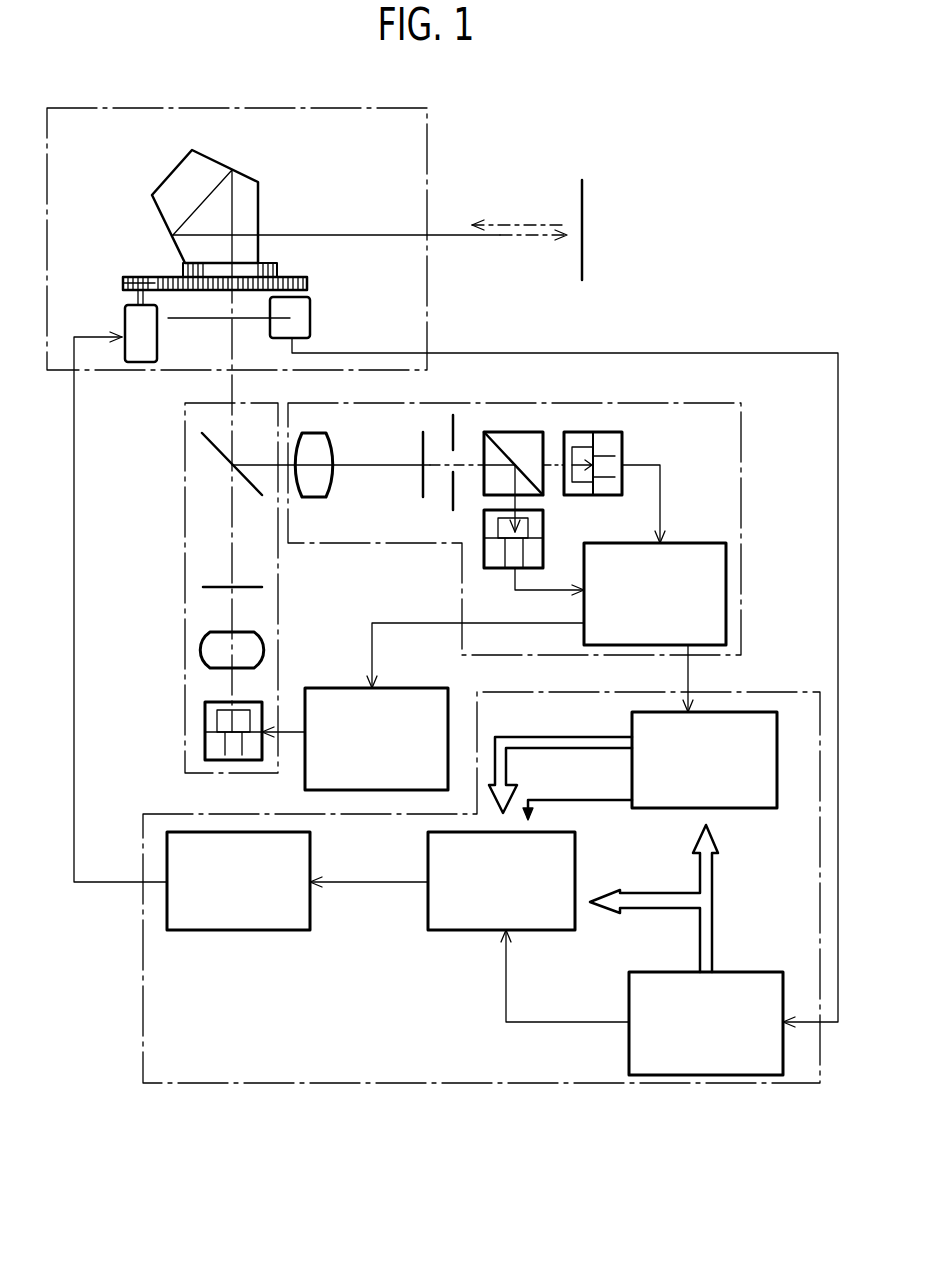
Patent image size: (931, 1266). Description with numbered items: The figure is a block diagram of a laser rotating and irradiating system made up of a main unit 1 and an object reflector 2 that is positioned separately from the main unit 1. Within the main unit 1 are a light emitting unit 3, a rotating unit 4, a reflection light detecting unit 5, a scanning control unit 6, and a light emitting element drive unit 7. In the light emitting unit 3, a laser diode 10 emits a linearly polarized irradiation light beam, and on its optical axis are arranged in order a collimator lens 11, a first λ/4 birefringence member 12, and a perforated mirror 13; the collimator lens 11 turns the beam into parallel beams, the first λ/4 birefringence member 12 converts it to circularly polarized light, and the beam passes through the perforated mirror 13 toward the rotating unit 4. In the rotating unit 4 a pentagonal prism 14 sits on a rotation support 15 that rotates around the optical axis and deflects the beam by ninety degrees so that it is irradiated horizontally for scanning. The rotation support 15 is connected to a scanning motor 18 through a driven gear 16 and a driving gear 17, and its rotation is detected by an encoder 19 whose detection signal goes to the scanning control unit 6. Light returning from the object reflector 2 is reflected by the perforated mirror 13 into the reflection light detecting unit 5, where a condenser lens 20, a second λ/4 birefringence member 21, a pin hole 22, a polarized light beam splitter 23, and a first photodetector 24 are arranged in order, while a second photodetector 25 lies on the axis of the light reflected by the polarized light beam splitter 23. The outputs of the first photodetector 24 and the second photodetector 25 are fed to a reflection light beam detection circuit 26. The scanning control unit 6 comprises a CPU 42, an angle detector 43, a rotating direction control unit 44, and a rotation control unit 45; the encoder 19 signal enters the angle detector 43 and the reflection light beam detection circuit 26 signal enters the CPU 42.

The main unit 1 is at (752, 342).
The object reflector 2 is at (597, 228).
The light emitting unit 3 is at (185, 625).
The rotating unit 4 is at (428, 187).
The reflection light detecting unit 5 is at (583, 401).
The scanning control unit 6 is at (805, 692).
The light emitting element drive unit 7 is at (337, 688).
The laser diode 10 is at (205, 725).
The collimator lens 11 is at (258, 638).
The first λ/4 birefringence member 12 is at (212, 585).
The perforated mirror 13 is at (216, 447).
The pentagonal prism 14 is at (173, 172).
The rotation support 15 is at (270, 265).
The driven gear 16 is at (310, 283).
The driving gear 17 is at (158, 275).
The scanning motor 18 is at (157, 345).
The encoder 19 is at (310, 315).
The condenser lens 20 is at (328, 486).
The second λ/4 birefringence member 21 is at (424, 442).
The pin hole 22 is at (455, 433).
The polarized light beam splitter 23 is at (528, 431).
The first photodetector 24 is at (612, 431).
The second photodetector 25 is at (484, 553).
The reflection light beam detection circuit 26 is at (726, 573).
The CPU 42 is at (777, 782).
The angle detector 43 is at (751, 972).
The rotating direction control unit 44 is at (443, 930).
The rotation control unit 45 is at (240, 930).